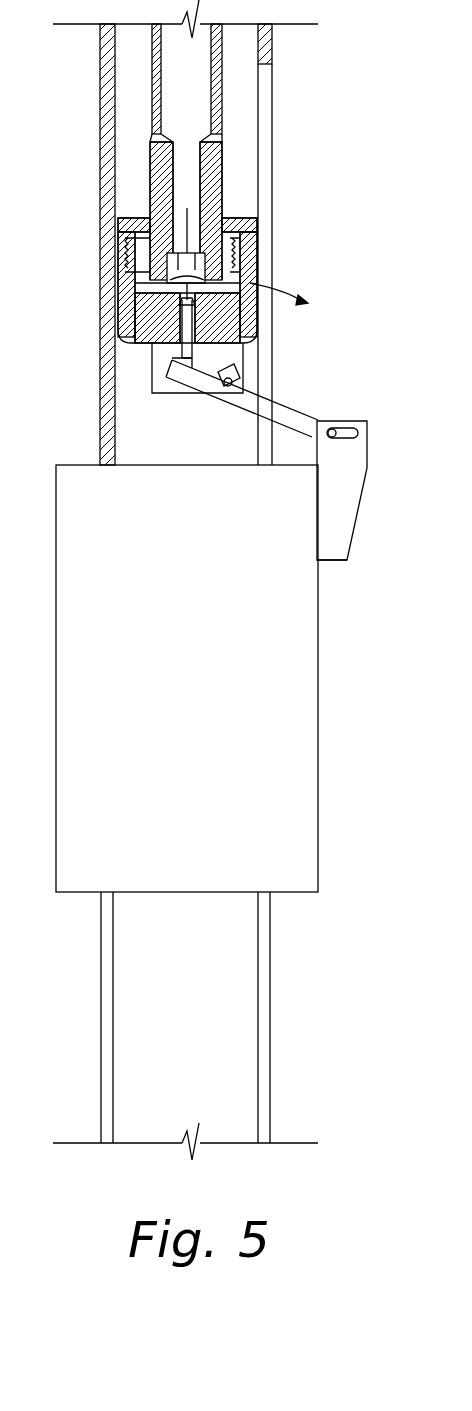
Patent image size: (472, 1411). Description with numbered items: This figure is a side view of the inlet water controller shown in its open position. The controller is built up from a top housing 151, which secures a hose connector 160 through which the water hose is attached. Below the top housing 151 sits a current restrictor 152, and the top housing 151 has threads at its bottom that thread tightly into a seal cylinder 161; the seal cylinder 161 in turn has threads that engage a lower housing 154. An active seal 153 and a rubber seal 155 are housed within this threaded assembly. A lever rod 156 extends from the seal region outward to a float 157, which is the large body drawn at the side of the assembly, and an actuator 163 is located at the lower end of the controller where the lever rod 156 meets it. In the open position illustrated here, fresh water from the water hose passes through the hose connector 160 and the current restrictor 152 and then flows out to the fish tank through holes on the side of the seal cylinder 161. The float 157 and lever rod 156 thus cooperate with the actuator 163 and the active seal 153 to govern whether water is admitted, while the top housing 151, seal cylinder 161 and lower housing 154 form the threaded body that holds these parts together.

The top housing 151 is at (127, 262).
The current restrictor 152 is at (238, 240).
The active seal 153 is at (243, 315).
The lower housing 154 is at (123, 326).
The rubber seal 155 is at (145, 345).
The lever rod 156 is at (293, 398).
The float 157 is at (325, 705).
The hose connector 160 is at (203, 178).
The seal cylinder 161 is at (130, 292).
The actuator 163 is at (176, 366).